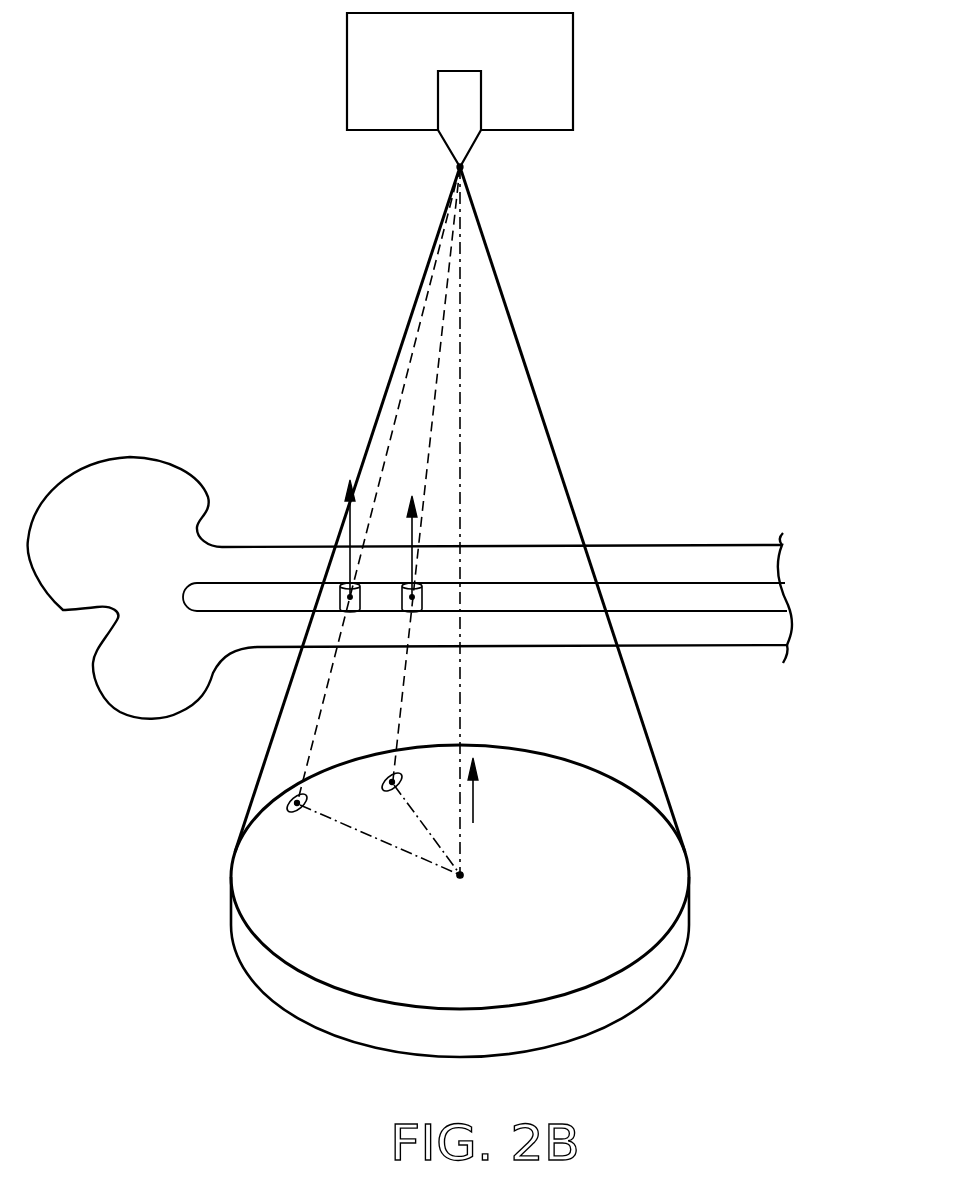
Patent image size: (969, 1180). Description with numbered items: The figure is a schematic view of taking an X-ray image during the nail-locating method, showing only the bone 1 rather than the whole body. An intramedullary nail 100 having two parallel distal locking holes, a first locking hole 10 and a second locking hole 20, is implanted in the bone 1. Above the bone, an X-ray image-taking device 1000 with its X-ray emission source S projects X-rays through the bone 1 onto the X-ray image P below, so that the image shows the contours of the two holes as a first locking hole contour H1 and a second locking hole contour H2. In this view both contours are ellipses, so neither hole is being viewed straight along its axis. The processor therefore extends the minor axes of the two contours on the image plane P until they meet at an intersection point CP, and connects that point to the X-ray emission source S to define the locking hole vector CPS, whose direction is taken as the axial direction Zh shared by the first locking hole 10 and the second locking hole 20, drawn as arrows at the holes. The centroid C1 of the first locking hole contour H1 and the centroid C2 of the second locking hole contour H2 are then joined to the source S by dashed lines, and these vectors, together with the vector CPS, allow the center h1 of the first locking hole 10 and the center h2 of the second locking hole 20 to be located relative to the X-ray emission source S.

The X-ray image-taking device 1000 is at (362, 75).
The X-ray emission source S is at (447, 171).
The bone 1 is at (147, 470).
The intramedullary nail 100 is at (680, 600).
The first locking hole 10 is at (340, 591).
The second locking hole 20 is at (422, 591).
The center of first locking hole h1 is at (349, 597).
The center of second locking hole h2 is at (414, 597).
The axial direction Zh is at (365, 537).
The X-ray image P is at (689, 861).
The centroid of first locking hole contour C1 is at (296, 797).
The centroid of second locking hole contour C2 is at (396, 780).
The first locking hole contour H1 is at (294, 812).
The second locking hole contour H2 is at (389, 779).
The intersection point CP is at (478, 877).
The locking hole vector CPS is at (522, 785).